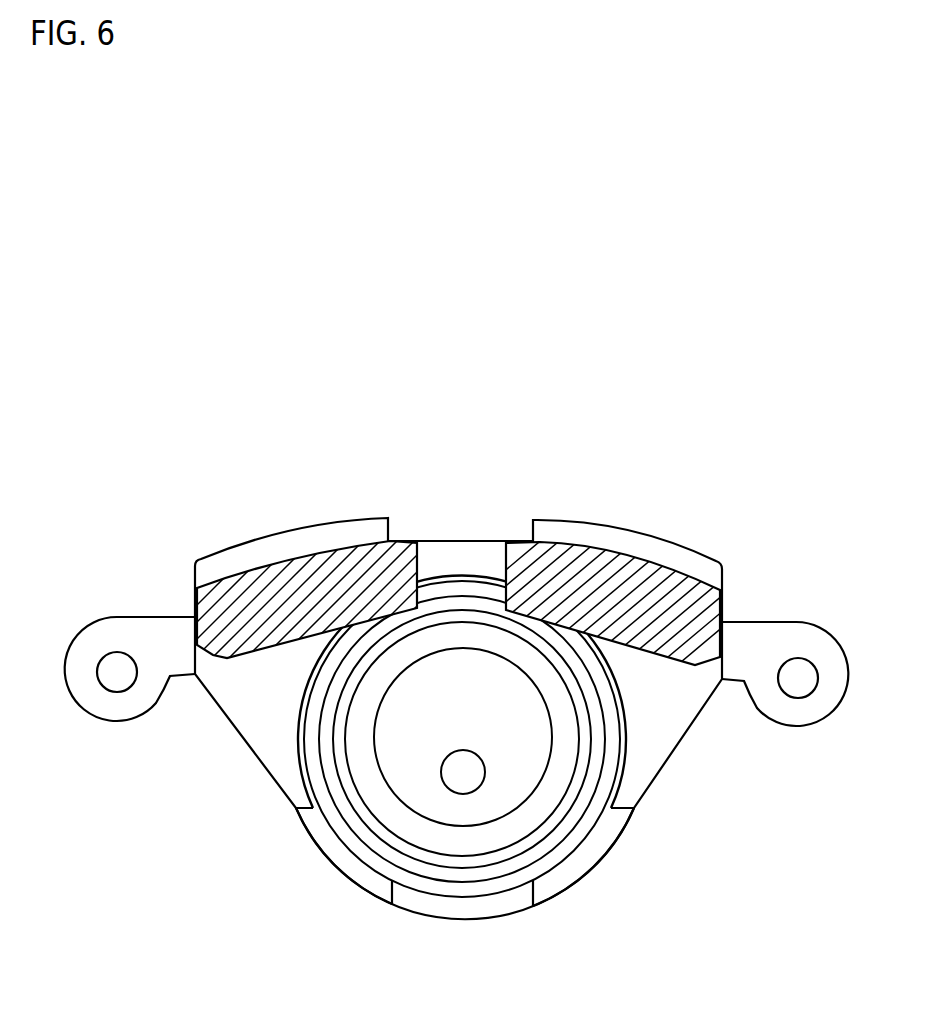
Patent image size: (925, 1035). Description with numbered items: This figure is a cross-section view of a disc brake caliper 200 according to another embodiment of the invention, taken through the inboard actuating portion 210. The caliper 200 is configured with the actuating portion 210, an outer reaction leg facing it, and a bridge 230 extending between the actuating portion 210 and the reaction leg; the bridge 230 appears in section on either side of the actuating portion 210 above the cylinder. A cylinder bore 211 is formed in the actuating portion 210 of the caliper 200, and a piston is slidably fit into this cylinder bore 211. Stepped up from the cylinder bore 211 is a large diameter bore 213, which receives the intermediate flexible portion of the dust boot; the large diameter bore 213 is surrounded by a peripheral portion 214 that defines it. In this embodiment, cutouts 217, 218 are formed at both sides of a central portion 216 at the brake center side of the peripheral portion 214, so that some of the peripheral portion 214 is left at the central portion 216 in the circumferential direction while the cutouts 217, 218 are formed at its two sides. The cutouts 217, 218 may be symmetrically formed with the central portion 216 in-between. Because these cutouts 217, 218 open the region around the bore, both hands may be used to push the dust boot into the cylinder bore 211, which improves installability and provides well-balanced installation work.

The caliper 200 is at (462, 488).
The actuating portion 210 is at (668, 770).
The cylinder bore 211 is at (352, 783).
The large diameter bore 213 is at (613, 730).
The peripheral portion 214 is at (633, 792).
The central portion 216 is at (480, 912).
The cutout 217 is at (372, 890).
The cutout 218 is at (567, 880).
The bridge 230 is at (622, 596).